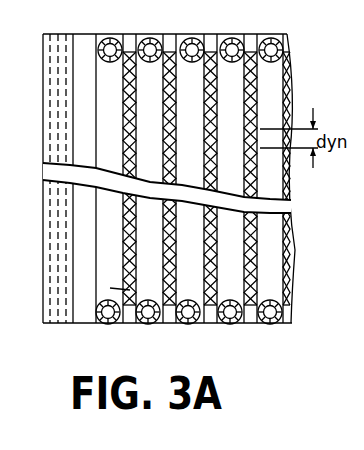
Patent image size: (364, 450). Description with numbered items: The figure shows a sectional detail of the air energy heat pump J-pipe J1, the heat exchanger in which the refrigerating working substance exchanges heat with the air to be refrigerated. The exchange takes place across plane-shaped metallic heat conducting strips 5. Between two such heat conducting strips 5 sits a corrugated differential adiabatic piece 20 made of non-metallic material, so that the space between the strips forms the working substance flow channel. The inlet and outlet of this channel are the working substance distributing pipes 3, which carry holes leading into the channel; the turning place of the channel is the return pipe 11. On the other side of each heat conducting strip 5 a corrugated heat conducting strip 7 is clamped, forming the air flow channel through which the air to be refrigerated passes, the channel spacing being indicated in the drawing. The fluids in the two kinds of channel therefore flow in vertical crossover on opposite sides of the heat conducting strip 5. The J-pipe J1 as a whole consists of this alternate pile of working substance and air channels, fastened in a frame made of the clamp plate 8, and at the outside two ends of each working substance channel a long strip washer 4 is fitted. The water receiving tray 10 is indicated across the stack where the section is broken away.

The working substance distributing pipe 3 is at (107, 34).
The washer 4 is at (130, 46).
The dxn differential adiabatic piece 20 is at (150, 108).
The water receiving tray 10 is at (43, 176).
The corrugated heat conducting strip 7 is at (120, 228).
The heat conducting strip 5 is at (160, 270).
The return pipe 11 is at (98, 304).
The clamp plate 8 is at (151, 318).
The air energy heat pump J-pipe J1 is at (150, 322).